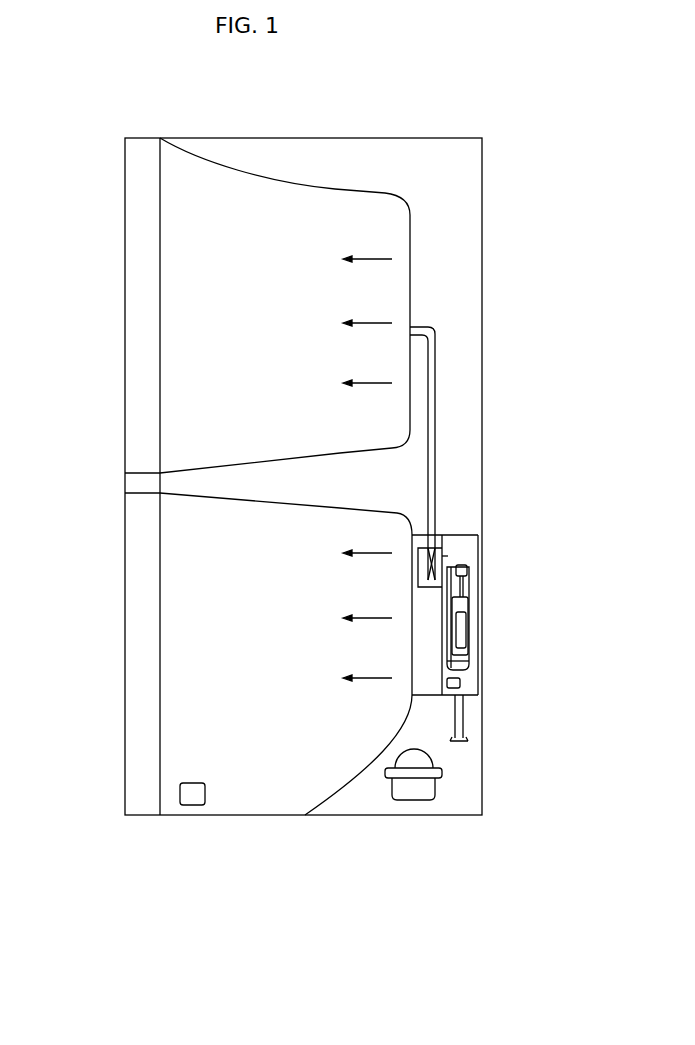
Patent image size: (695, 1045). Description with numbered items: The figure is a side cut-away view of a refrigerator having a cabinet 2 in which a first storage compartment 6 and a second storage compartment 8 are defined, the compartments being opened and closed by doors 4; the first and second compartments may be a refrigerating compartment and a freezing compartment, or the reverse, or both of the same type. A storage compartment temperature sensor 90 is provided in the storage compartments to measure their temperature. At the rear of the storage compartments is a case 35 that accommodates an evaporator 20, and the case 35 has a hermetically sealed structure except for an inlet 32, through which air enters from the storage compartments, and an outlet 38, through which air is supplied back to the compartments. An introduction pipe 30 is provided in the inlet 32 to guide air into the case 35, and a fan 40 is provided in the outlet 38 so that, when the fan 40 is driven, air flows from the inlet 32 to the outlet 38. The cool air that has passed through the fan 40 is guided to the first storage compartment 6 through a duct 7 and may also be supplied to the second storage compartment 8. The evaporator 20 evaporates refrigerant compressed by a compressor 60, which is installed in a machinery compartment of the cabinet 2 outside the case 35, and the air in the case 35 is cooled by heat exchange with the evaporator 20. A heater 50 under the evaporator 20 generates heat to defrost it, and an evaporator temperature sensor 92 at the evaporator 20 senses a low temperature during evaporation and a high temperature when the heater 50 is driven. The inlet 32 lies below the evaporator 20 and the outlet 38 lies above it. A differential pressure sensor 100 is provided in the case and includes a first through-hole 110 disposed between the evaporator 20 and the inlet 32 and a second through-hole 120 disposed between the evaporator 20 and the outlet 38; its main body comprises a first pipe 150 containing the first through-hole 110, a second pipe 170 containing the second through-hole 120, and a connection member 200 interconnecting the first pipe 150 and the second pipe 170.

The cabinet 2 is at (401, 138).
The doors 4 is at (143, 395).
The first storage compartment 6 is at (297, 227).
The duct 7 is at (436, 434).
The second storage compartment 8 is at (262, 703).
The evaporator 20 is at (441, 610).
The introduction pipe 30 is at (465, 727).
The inlet 32 is at (465, 706).
The case 35 is at (441, 652).
The outlet 38 is at (444, 560).
The fan 40 is at (432, 548).
The heater 50 is at (461, 683).
The compressor 60 is at (414, 790).
The storage compartment temperature sensor 90 is at (180, 790).
The evaporator temperature sensor 92 is at (441, 594).
The differential pressure sensor 100 is at (527, 619).
The first through-hole 110 is at (504, 663).
The second through-hole 120 is at (469, 605).
The first pipe 150 is at (467, 626).
The second pipe 170 is at (470, 590).
The connection member 200 is at (468, 567).